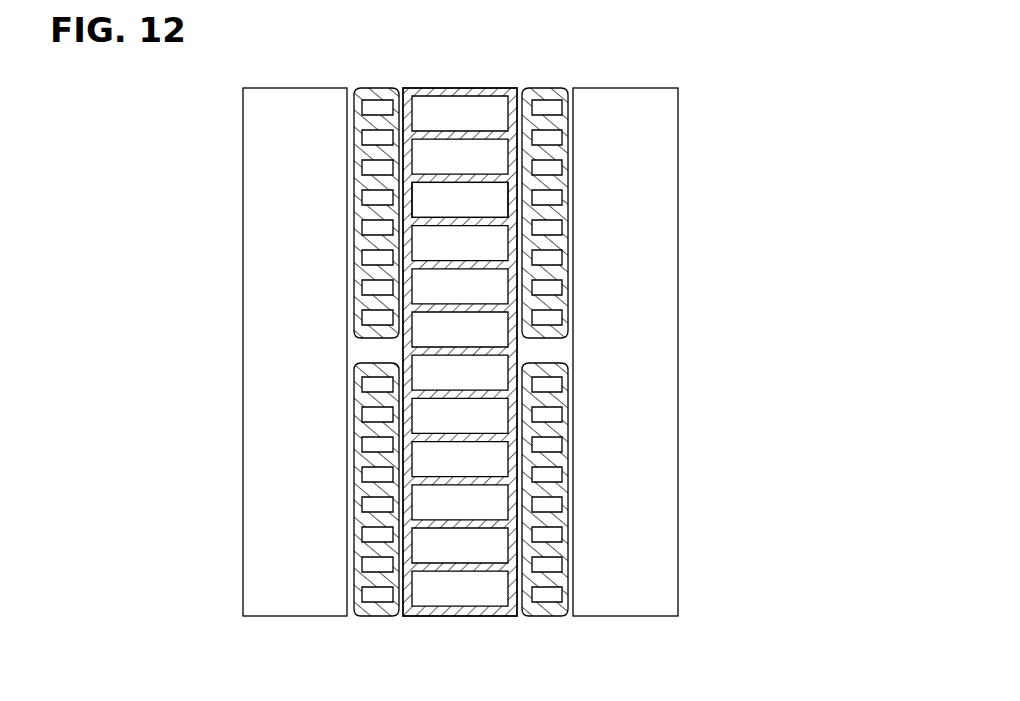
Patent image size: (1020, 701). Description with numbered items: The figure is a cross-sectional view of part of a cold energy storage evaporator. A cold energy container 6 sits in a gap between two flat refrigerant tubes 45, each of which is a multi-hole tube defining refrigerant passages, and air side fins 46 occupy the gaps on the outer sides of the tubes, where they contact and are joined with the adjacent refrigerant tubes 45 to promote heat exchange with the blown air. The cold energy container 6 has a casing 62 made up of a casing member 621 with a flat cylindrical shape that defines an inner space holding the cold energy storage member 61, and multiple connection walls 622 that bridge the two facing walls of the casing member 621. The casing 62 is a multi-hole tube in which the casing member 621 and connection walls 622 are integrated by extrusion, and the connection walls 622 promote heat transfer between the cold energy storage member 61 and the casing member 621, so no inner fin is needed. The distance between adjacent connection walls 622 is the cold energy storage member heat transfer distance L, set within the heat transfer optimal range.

The cold energy container 6 is at (612, 316).
The refrigerant tube 45 is at (380, 88).
The air side fin 46 is at (258, 178).
The cold energy storage member 61 is at (490, 201).
The casing 62 is at (773, 225).
The casing member 621 is at (518, 258).
The connection wall 622 is at (455, 268).
The cold energy storage member heat transfer distance L is at (405, 525).